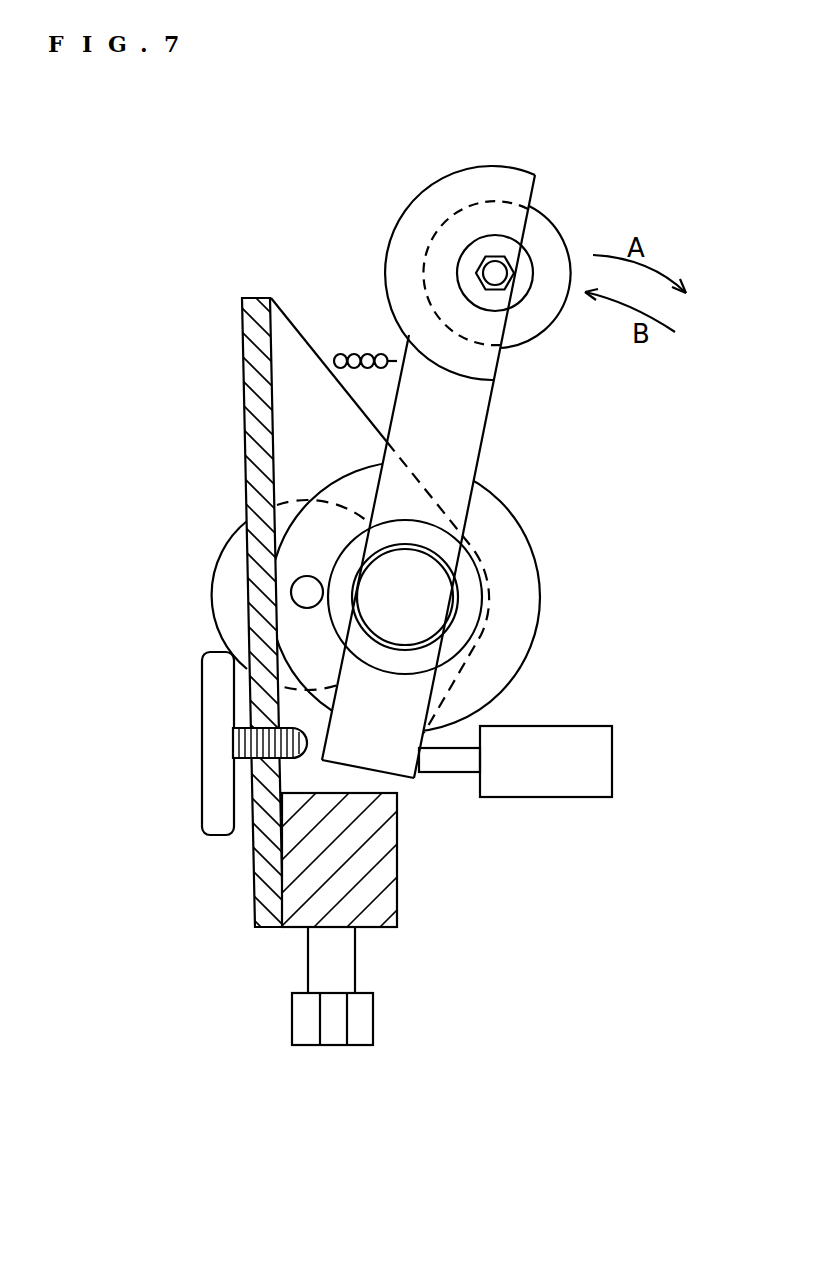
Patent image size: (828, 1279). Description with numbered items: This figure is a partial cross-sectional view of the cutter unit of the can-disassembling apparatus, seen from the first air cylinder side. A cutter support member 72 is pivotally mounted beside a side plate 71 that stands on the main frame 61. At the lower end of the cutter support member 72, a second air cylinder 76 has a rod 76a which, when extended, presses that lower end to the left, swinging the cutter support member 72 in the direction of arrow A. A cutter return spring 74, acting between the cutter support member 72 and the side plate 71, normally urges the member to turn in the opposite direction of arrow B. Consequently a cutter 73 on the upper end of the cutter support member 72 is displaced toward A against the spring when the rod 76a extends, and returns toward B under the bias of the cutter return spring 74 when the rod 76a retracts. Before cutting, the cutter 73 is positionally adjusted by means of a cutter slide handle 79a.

The main frame 61 is at (372, 928).
The side plate 71 is at (270, 912).
The cutter support member 72 is at (472, 456).
The cutter 73 is at (543, 233).
The cutter return spring 74 is at (350, 354).
The second air cylinder 76 is at (565, 785).
The rod 76a is at (442, 772).
The cutter slide handle 79a is at (226, 576).